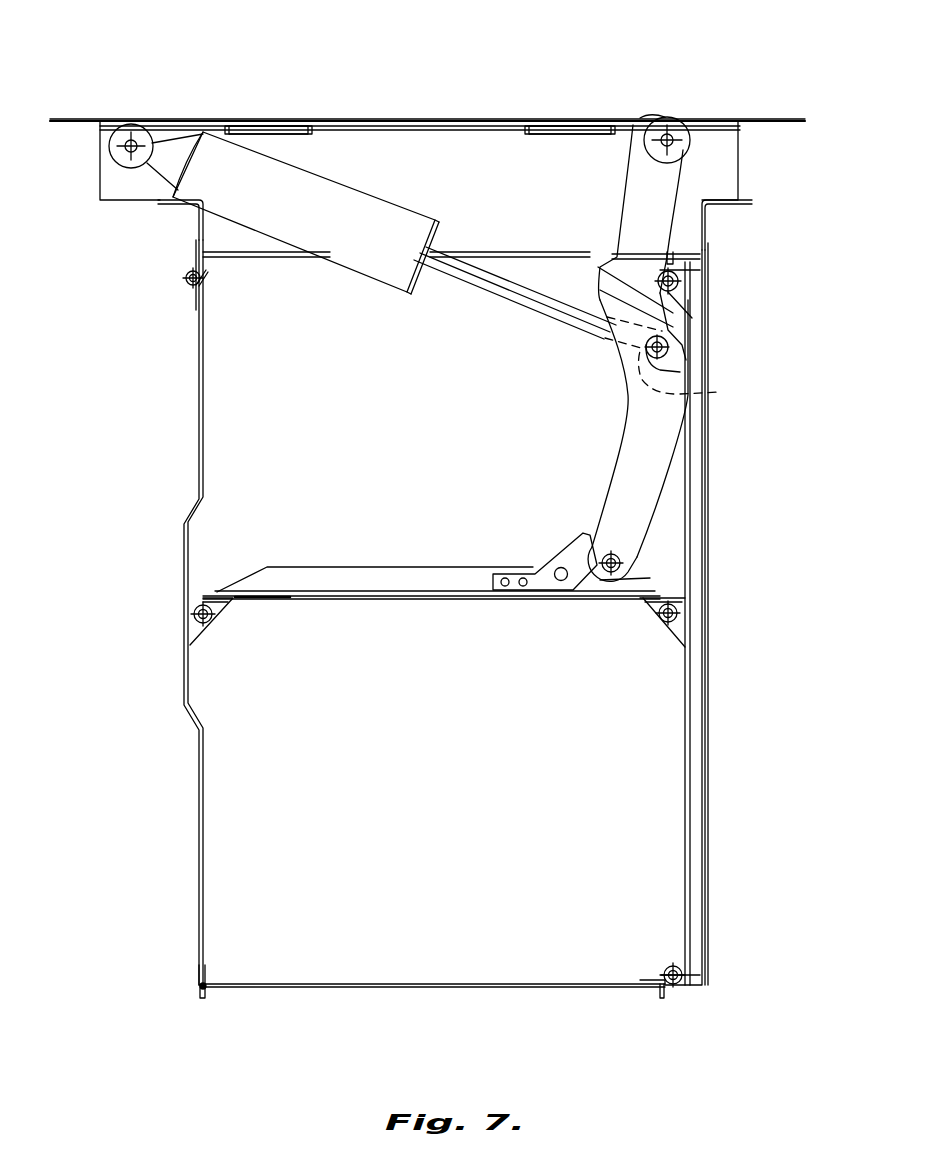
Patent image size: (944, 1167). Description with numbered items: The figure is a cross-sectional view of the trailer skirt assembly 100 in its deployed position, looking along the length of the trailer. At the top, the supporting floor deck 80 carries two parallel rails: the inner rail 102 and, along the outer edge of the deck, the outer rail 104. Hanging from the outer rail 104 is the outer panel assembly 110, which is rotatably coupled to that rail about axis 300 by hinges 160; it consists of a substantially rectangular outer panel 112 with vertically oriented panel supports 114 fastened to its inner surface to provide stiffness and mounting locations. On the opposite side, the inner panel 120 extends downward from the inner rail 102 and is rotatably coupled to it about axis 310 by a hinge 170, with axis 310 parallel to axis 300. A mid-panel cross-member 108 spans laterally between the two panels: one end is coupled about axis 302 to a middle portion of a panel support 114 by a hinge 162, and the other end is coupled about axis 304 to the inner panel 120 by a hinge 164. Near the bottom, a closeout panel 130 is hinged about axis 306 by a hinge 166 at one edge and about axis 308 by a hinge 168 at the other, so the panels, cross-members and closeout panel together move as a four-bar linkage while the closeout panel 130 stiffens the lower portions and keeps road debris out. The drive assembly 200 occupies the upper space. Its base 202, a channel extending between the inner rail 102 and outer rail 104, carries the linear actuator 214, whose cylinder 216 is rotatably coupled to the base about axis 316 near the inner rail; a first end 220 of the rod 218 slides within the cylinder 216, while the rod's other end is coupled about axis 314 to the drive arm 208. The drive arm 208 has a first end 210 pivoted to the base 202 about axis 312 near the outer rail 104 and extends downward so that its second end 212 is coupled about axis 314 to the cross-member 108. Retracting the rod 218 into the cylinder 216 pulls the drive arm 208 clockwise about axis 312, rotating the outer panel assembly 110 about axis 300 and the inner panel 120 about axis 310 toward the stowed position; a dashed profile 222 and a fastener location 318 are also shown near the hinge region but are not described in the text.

The skirt assembly 100 is at (203, 57).
The supporting floor deck 80 is at (96, 119).
The base 202 is at (276, 122).
The inner rail 102 is at (198, 233).
The outer rail 104 is at (682, 205).
The mid-panel cross-member 108 is at (292, 599).
The outer panel assembly 110 is at (716, 758).
The outer panel 112 is at (708, 804).
The panel support 114 is at (690, 846).
The inner panel 120 is at (197, 506).
The closeout panel 130 is at (361, 988).
The hinge 160 is at (681, 311).
The hinge 162 is at (683, 599).
The hinge 164 is at (210, 599).
The hinge 166 is at (649, 979).
The hinge 168 is at (199, 967).
The hinge 170 is at (196, 299).
The drive assembly 200 is at (472, 294).
The drive arm 208 is at (666, 456).
The first end 210 is at (623, 113).
The second end 212 is at (651, 538).
The linear actuator 214 is at (432, 200).
The cylinder 216 is at (341, 196).
The rod 218 is at (516, 290).
The first end 220 is at (437, 301).
The hidden cam profile 222 is at (700, 393).
The axis 300 is at (690, 283).
The axis 302 is at (686, 629).
The axis 304 is at (199, 624).
The axis 306 is at (686, 976).
The axis 308 is at (200, 988).
The axis 310 is at (186, 277).
The axis 312 is at (676, 128).
The axis 314 is at (632, 567).
The axis 316 is at (121, 162).
The cam bolt 318 is at (681, 353).